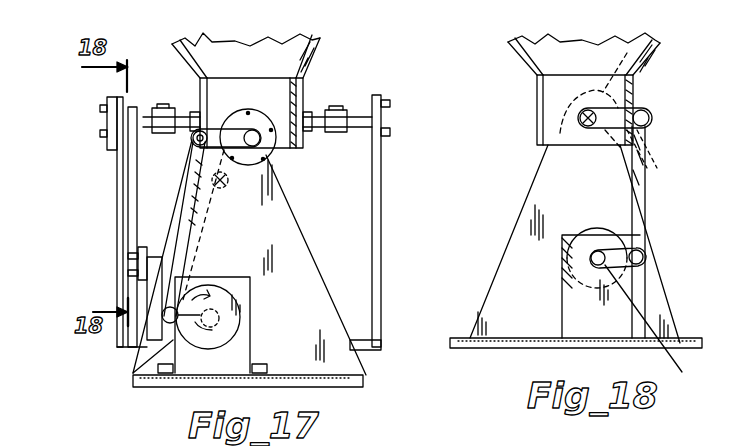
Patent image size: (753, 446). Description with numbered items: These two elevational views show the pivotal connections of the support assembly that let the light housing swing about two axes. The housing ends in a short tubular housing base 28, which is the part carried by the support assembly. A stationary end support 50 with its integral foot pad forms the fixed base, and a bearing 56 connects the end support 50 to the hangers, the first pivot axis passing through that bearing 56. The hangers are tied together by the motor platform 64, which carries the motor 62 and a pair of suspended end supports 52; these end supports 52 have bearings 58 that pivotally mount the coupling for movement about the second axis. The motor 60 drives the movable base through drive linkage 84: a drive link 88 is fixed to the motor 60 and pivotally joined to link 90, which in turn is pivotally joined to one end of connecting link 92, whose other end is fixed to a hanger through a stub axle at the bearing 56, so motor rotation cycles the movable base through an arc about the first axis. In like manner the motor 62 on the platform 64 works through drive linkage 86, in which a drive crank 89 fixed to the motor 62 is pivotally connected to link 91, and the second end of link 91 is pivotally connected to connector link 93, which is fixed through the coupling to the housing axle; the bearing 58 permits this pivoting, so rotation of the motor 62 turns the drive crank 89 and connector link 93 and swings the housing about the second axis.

In FIG. 17, the housing base 28 is at (305, 75).
In FIG. 18, the housing base 28 is at (635, 92).
In FIG. 17, the stationary end support 50 is at (306, 297).
In FIG. 17, the suspended end support 52 is at (118, 200).
In FIG. 18, the suspended end support 52 is at (665, 293).
In FIG. 17, the bearing 56 is at (270, 160).
In FIG. 17, the bearing 58 is at (107, 110).
In FIG. 17, the motor 60 is at (250, 333).
In FIG. 17, the motor 62 is at (147, 253).
In FIG. 18, the motor 62 is at (573, 293).
In FIG. 17, the motor platform 64 is at (367, 348).
In FIG. 18, the motor platform 64 is at (697, 338).
In FIG. 17, the drive linkage 84 is at (205, 242).
In FIG. 18, the drive linkage 86 is at (668, 177).
In FIG. 17, the drive link 88 is at (128, 377).
In FIG. 18, the drive crank 89 is at (660, 329).
In FIG. 17, the link 90 is at (207, 190).
In FIG. 18, the link 91 is at (633, 213).
In FIG. 17, the connecting link 92 is at (218, 132).
In FIG. 18, the connector link 93 is at (646, 104).